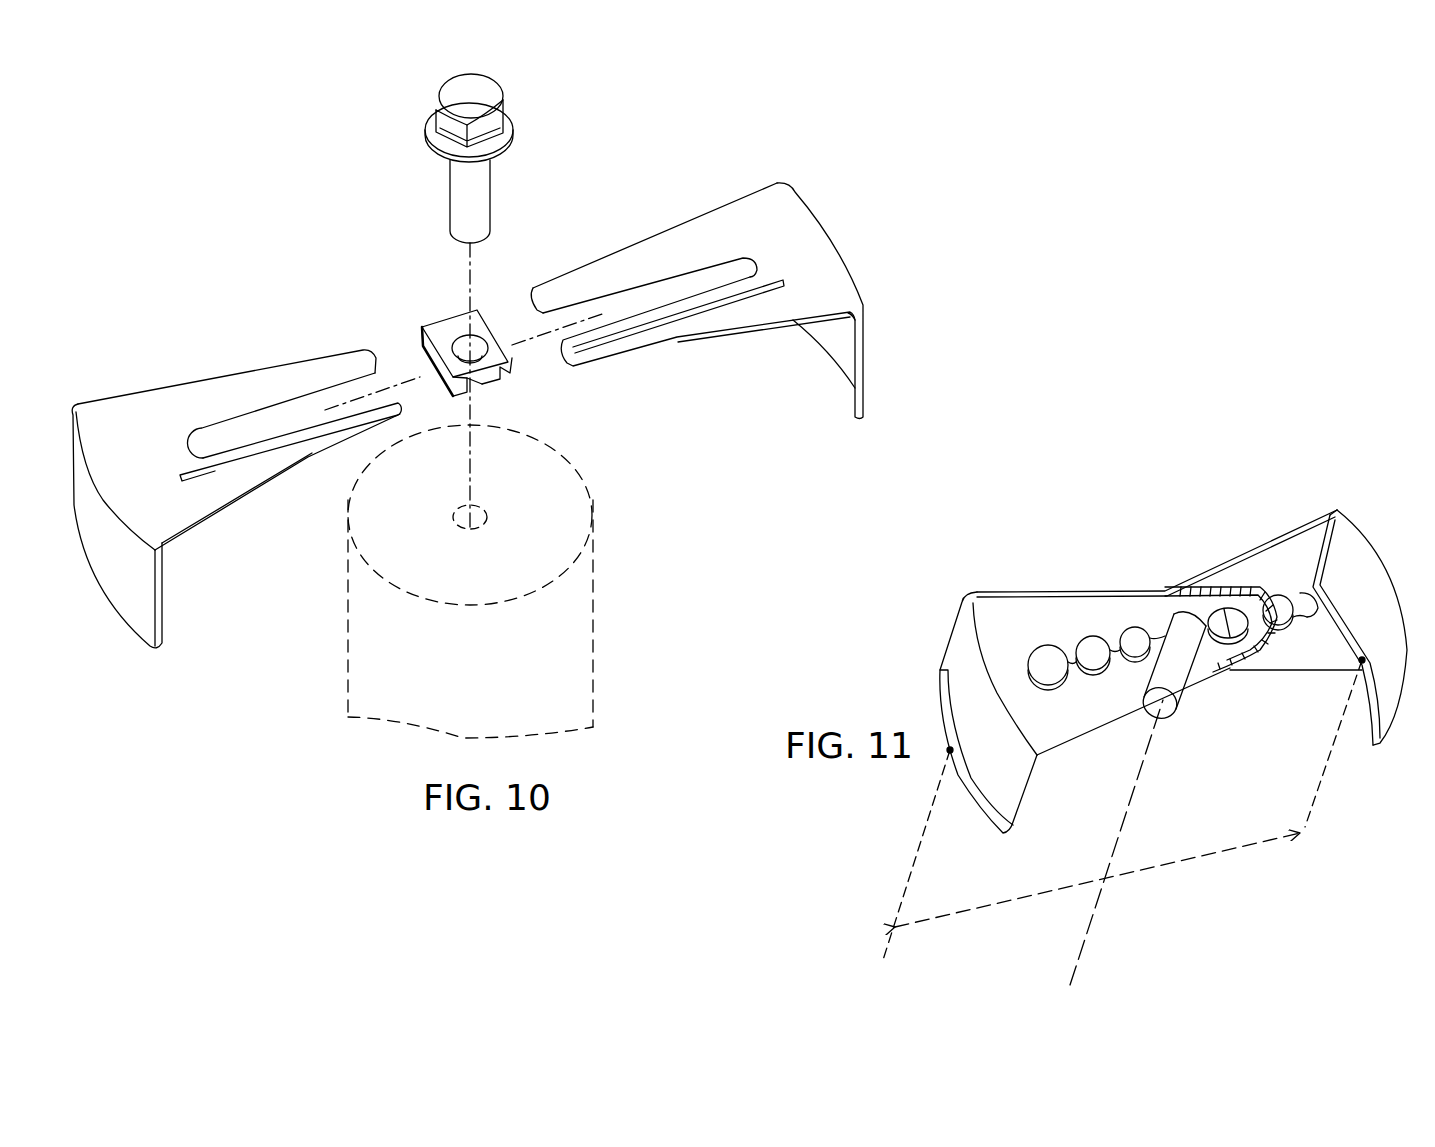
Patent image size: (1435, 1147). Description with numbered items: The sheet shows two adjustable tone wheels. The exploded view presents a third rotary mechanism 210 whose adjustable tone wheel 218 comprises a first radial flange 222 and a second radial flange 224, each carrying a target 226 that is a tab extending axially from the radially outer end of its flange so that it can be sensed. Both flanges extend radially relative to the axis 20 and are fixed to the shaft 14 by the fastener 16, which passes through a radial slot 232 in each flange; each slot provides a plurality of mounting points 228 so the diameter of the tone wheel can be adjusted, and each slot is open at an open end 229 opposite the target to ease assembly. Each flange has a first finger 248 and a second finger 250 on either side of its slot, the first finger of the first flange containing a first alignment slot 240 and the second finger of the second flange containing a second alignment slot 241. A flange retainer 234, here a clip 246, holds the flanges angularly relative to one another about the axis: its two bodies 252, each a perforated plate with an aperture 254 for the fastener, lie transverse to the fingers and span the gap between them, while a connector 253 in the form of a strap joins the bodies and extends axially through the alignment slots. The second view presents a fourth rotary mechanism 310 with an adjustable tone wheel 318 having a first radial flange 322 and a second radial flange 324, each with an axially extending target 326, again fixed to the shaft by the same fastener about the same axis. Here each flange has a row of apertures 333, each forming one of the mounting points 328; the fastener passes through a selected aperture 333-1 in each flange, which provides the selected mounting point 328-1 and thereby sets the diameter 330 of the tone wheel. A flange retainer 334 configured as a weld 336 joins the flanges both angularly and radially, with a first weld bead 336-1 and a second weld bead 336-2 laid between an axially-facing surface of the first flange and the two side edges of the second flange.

In FIG. 10, the shaft 14 is at (593, 665).
In FIG. 10, the fastener 16 is at (470, 96).
In FIG. 11, the fastener 16 is at (1160, 703).
In FIG. 10, the axis 20 is at (478, 458).
In FIG. 11, the axis 20 is at (1083, 925).
In FIG. 10, the third rotary mechanism 210 is at (763, 147).
In FIG. 10, the adjustable tone wheel 218 is at (456, 403).
In FIG. 10, the first radial flange 222 is at (770, 223).
In FIG. 10, the second radial flange 224 is at (112, 417).
In FIG. 10, the target 226 is at (162, 617).
In FIG. 10, the mounting points 228 is at (203, 432).
In FIG. 10, the open end 229 is at (374, 352).
In FIG. 10, the radial slot 232 is at (247, 423).
In FIG. 10, the flange retainer 234 is at (421, 305).
In FIG. 10, the first alignment slot 240 is at (745, 300).
In FIG. 10, the second alignment slot 241 is at (227, 463).
In FIG. 10, the clip 246 is at (447, 298).
In FIG. 10, the first finger 248 is at (305, 372).
In FIG. 10, the second finger 250 is at (333, 448).
In FIG. 10, the body 252 is at (425, 370).
In FIG. 10, the connector 253 is at (483, 384).
In FIG. 10, the aperture 254 is at (484, 347).
In FIG. 11, the fourth rotary mechanism 310 is at (960, 495).
In FIG. 11, the adjustable tone wheel 318 is at (1153, 643).
In FIG. 11, the first radial flange 322 is at (1335, 510).
In FIG. 11, the second radial flange 324 is at (1007, 593).
In FIG. 11, the target 326 is at (975, 808).
In FIG. 11, the mounting points 328 is at (1307, 610).
In FIG. 11, the selected mounting point 328-1 is at (1150, 598).
In FIG. 11, the diameter 330 is at (1305, 592).
In FIG. 11, the apertures 333 is at (1078, 640).
In FIG. 11, the selected aperture 333-1 is at (1175, 623).
In FIG. 11, the flange retainer 334 is at (1197, 577).
In FIG. 11, the weld 336 is at (1260, 677).
In FIG. 11, the first weld bead 336-1 is at (1228, 582).
In FIG. 11, the second weld bead 336-2 is at (1248, 670).